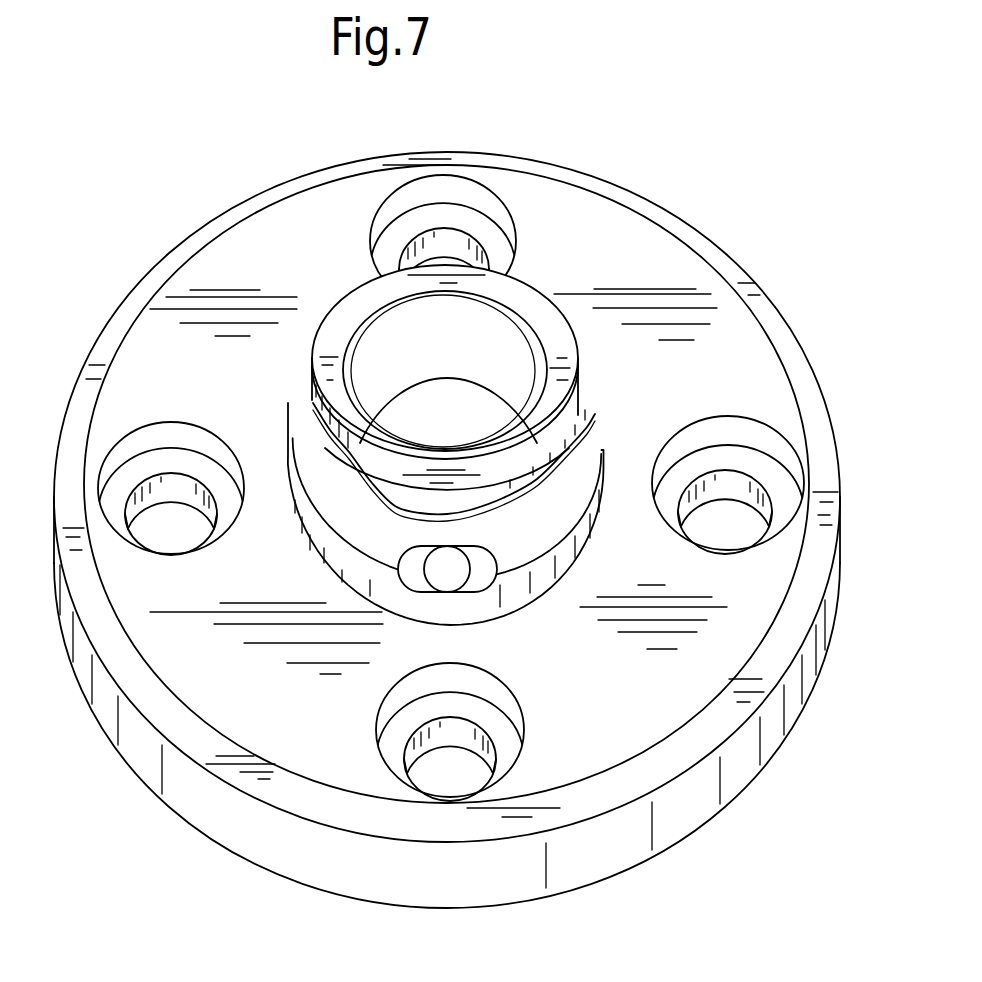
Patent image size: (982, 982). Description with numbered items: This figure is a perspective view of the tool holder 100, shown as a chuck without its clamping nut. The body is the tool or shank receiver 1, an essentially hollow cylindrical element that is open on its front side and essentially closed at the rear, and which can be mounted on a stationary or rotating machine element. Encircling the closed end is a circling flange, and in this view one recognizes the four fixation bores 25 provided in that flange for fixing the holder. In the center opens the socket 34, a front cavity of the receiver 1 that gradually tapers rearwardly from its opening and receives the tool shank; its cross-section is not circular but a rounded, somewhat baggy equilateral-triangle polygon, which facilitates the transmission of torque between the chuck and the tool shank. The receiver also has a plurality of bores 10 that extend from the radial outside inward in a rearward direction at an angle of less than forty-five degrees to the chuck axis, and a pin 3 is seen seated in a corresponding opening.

The tool holder 100 is at (447, 551).
The tool or shank receiver 1 is at (217, 277).
The fixation bores 25 is at (739, 532).
The socket 34 is at (487, 337).
The bores 10 is at (488, 567).
The pin 3 is at (457, 575).